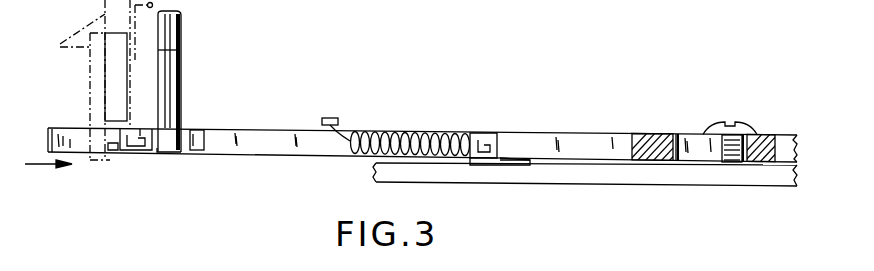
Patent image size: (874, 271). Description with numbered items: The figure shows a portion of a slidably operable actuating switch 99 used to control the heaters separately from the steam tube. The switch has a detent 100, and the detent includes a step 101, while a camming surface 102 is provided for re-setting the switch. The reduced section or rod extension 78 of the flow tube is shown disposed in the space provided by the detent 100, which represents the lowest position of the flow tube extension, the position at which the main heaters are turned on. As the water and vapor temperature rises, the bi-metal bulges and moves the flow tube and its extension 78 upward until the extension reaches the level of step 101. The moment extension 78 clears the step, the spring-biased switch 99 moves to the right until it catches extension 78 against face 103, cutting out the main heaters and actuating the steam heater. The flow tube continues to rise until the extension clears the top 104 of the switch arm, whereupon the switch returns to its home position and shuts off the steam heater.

The rod extension 78 is at (214, 68).
The actuating switch 99 is at (257, 130).
The detent 100 is at (200, 140).
The step 101 is at (148, 136).
The camming surface 102 is at (113, 144).
The face 103 is at (127, 140).
The top of switch arm 104 is at (76, 105).